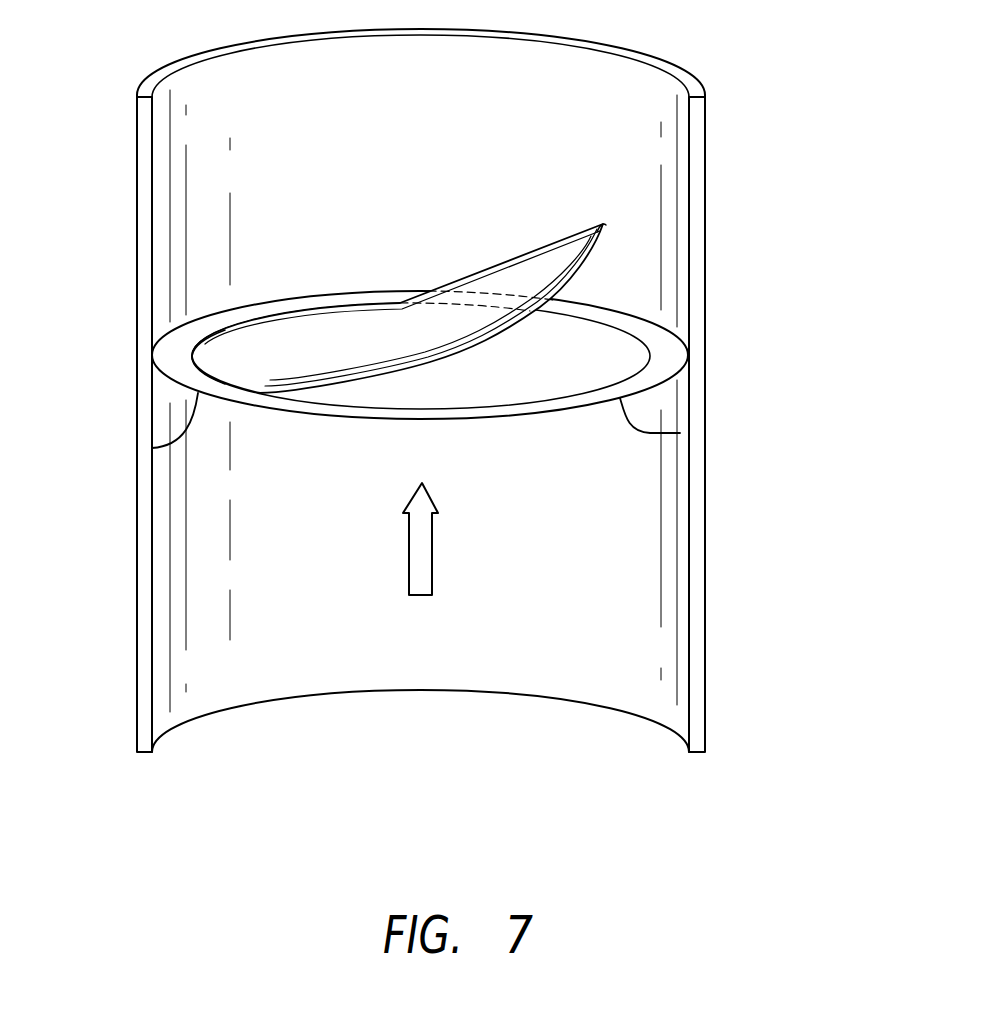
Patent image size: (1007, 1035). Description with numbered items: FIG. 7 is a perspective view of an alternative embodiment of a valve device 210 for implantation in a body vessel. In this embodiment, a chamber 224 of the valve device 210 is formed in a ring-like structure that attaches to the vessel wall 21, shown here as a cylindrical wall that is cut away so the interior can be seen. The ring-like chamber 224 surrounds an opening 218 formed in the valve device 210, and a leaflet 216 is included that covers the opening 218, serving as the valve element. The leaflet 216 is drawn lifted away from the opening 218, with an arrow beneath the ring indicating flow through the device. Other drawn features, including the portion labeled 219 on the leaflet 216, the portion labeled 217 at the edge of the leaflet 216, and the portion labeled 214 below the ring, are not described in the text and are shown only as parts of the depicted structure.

The valve device 210 is at (451, 390).
The vessel wall 21 is at (146, 297).
The opening 218 is at (609, 357).
The leaflet 216 is at (321, 273).
The flap tip 219 is at (588, 230).
The hinge 217 is at (193, 359).
The left lip 214 is at (152, 448).
The chamber 224 is at (680, 433).